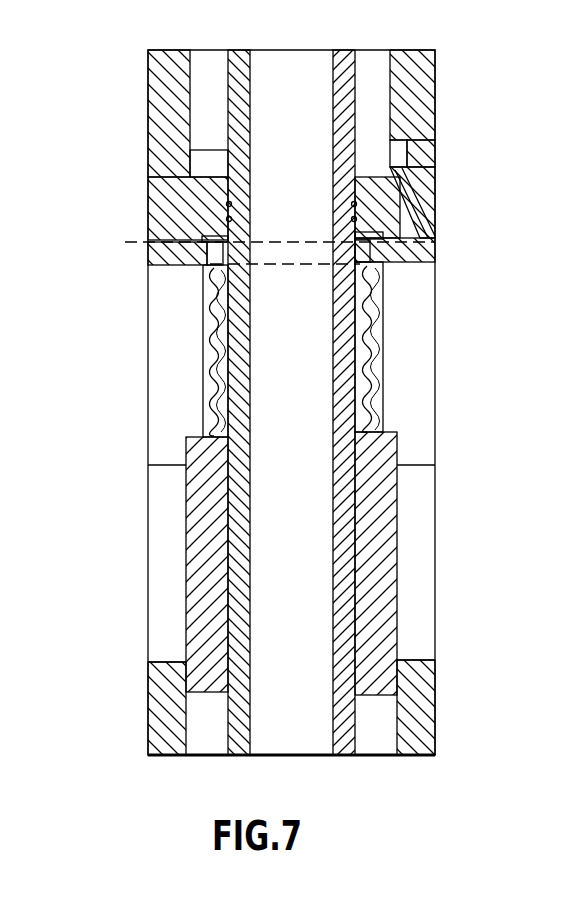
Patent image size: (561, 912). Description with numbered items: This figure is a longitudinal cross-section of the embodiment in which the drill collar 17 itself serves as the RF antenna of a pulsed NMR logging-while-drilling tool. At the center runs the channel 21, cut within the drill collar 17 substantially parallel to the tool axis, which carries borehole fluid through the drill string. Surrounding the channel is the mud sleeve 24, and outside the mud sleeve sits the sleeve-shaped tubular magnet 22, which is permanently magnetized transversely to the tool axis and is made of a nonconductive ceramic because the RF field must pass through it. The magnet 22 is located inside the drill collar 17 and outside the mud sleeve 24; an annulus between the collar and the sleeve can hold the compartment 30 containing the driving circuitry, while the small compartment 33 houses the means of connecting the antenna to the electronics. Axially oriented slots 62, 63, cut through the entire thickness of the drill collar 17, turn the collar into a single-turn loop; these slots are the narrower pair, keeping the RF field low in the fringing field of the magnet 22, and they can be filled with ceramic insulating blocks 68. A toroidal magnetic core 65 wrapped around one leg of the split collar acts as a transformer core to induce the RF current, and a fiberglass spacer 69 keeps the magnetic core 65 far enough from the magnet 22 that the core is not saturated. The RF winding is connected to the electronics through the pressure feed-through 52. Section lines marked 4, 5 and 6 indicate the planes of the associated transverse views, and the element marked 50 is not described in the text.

The drill collar 17 is at (165, 104).
The channel 21 is at (273, 93).
The tubular magnet 22 is at (382, 546).
The mud sleeve 24 is at (220, 147).
The compartment 30 is at (208, 177).
The small compartment 33 is at (398, 150).
The screws 50 is at (229, 203).
The pressure feed-through 52 is at (434, 202).
The slot 62 is at (420, 338).
The slot 63 is at (184, 338).
The toroidal magnetic core 65 is at (150, 246).
The ceramic insulating blocks 68 is at (172, 538).
The fiberglass spacer 69 is at (215, 382).
The section line 4- 4 is at (142, 568).
The section line 5- 5 is at (142, 372).
The section line 6- 6 is at (142, 256).